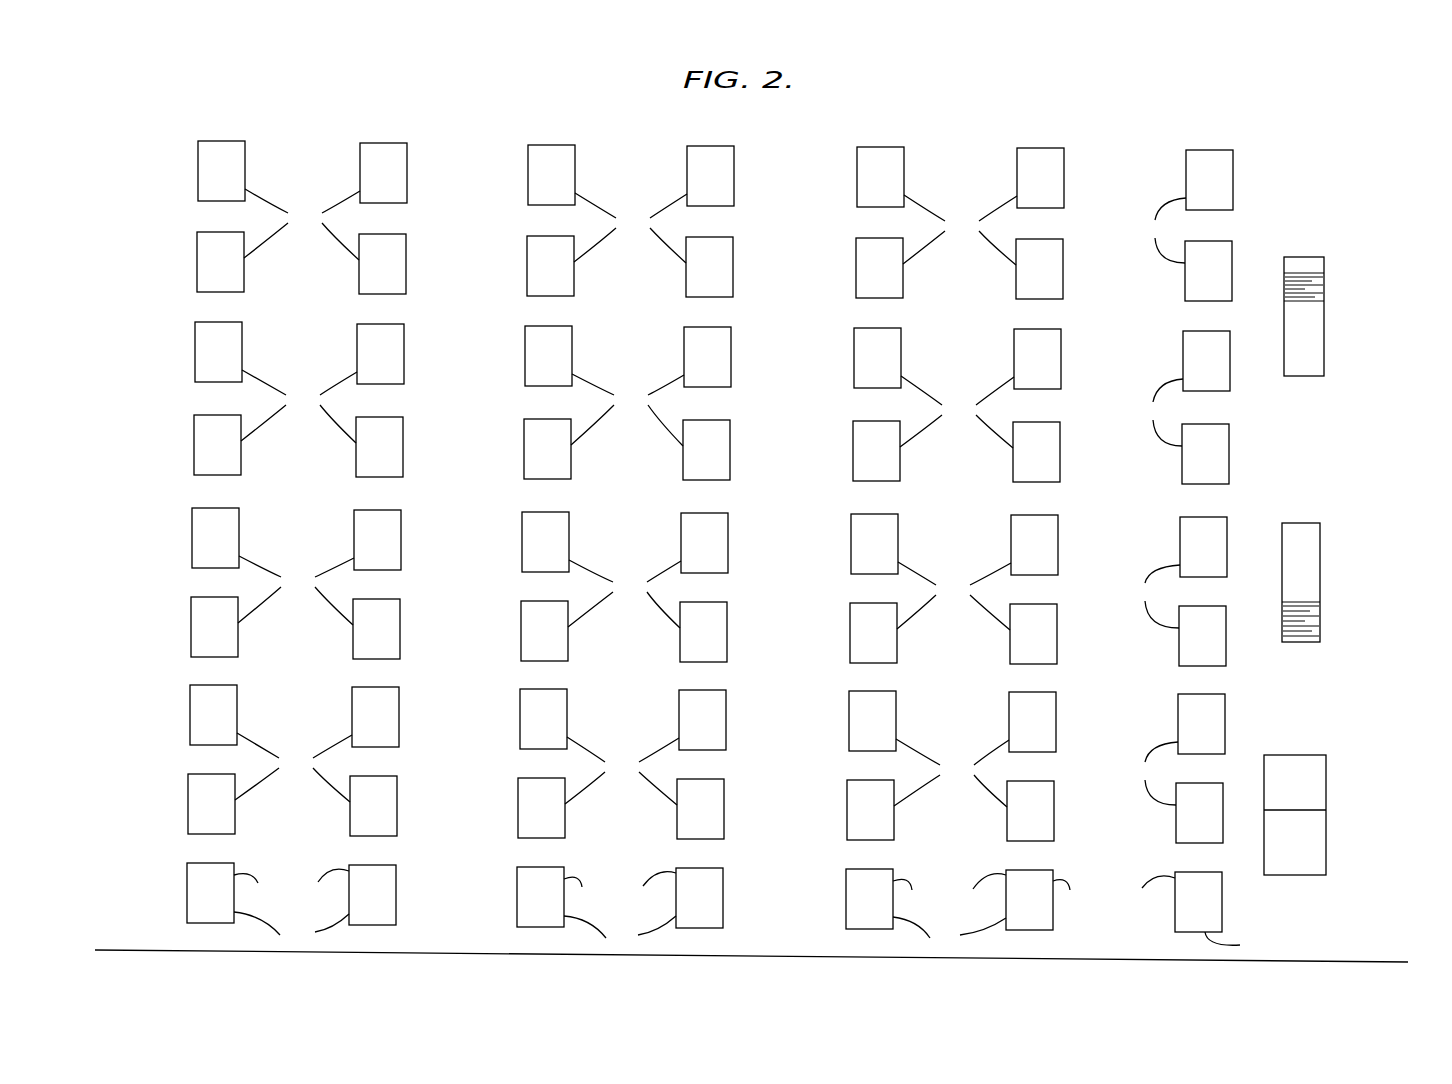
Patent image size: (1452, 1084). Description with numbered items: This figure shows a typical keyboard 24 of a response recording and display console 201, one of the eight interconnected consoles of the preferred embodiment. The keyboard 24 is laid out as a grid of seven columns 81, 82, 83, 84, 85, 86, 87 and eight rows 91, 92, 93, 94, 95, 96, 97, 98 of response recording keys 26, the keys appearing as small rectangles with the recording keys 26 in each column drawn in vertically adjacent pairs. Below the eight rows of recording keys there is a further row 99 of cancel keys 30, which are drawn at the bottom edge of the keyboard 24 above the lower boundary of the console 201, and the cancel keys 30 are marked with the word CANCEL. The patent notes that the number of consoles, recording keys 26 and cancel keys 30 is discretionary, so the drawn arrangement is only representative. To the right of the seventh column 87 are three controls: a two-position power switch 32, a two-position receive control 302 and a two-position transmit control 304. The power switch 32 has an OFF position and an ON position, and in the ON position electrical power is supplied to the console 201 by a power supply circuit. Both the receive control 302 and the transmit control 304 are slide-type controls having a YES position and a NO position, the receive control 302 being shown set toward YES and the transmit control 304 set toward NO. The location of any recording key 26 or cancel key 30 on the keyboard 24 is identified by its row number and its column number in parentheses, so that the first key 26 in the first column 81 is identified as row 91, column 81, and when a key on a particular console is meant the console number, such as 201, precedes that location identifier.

The keyboard 24 is at (751, 974).
The response recording key 26 is at (710, 498).
The cancel key 30 is at (753, 912).
The two-position power switch 32 is at (1327, 832).
The first column 81 is at (198, 506).
The second column 82 is at (383, 142).
The third column 83 is at (551, 144).
The fourth column 84 is at (710, 145).
The fifth column 85 is at (880, 146).
The sixth column 86 is at (1040, 147).
The seventh column 87 is at (1209, 149).
The first row 91 is at (197, 175).
The second row 92 is at (196, 266).
The third row 93 is at (194, 356).
The fourth row 94 is at (193, 449).
The fifth row 95 is at (191, 542).
The sixth row 96 is at (190, 631).
The seventh row 97 is at (189, 719).
The eighth row 98 is at (187, 808).
The row of cancel keys 99 is at (186, 897).
The response recording and display console 201 is at (1003, 960).
The two-position receive control 302 is at (1310, 626).
The two-position transmit control 304 is at (1318, 292).